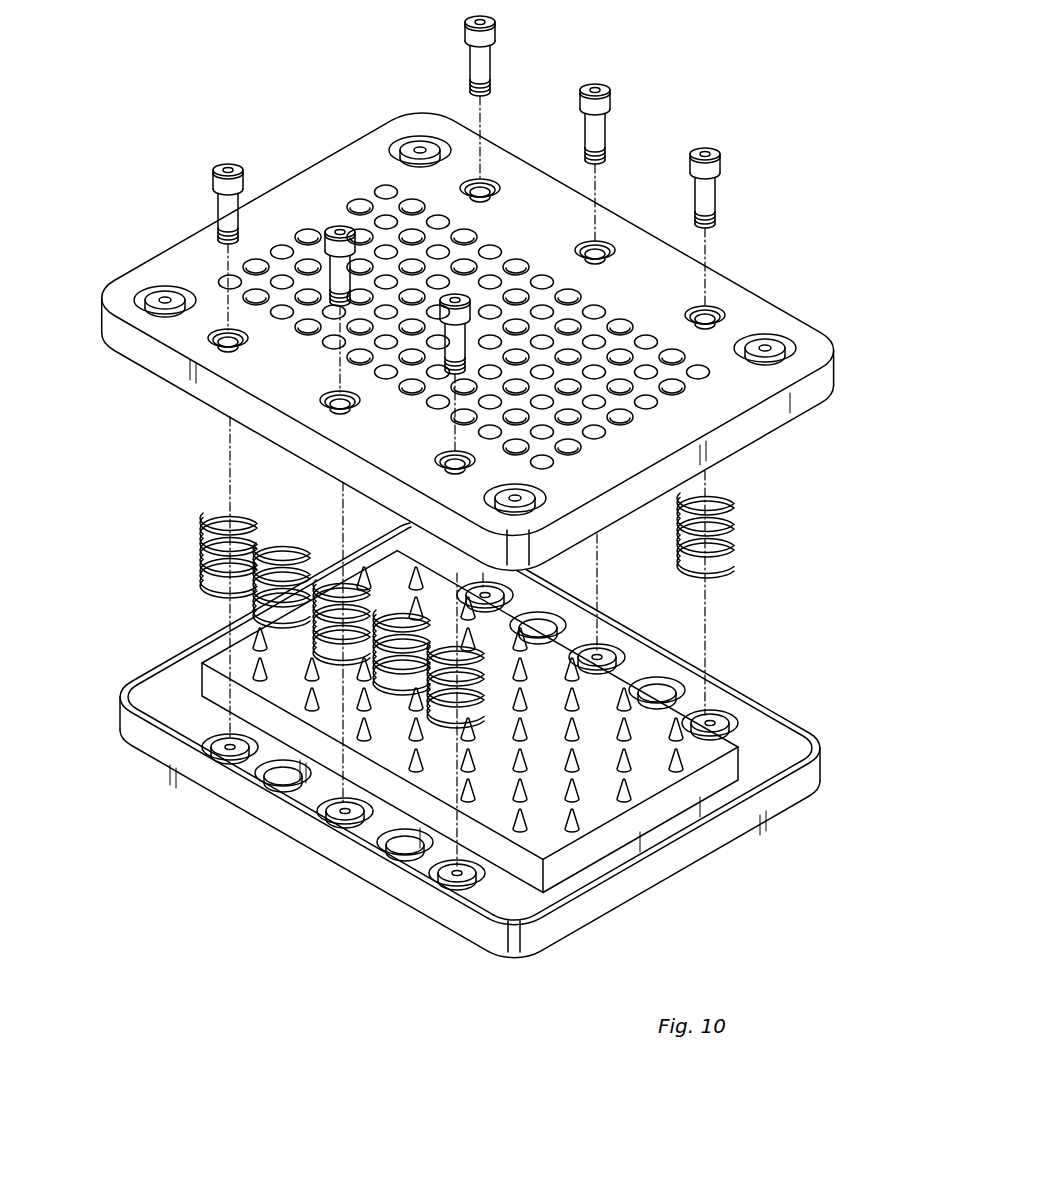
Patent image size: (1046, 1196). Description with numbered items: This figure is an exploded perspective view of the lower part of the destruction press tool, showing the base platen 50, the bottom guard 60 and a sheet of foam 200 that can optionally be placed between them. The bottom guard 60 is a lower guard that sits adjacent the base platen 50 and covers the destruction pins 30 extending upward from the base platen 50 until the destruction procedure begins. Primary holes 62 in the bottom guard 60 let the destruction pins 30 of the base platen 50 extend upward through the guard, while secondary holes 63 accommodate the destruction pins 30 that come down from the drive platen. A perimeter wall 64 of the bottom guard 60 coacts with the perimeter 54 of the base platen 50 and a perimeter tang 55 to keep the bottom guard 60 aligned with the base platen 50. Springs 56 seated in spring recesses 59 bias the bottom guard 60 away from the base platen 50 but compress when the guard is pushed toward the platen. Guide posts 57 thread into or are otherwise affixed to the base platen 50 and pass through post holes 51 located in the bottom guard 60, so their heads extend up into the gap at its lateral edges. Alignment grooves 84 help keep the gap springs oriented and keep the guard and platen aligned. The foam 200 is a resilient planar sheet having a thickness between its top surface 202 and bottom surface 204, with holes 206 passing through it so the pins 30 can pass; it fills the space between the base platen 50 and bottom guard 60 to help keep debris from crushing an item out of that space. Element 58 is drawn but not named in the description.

The destruction pins 30 is at (525, 702).
The base platen 50 is at (475, 751).
The post holes 51 is at (582, 246).
The perimeter 54 is at (486, 767).
The perimeter tang 55 is at (150, 706).
The springs 56 is at (210, 525).
The guide posts 57 is at (492, 60).
The counterbore 58 is at (608, 645).
The spring recesses 59 is at (650, 680).
The bottom guard 60 is at (463, 327).
The primary holes 62 is at (412, 394).
The secondary holes 63 is at (330, 346).
The perimeter wall 64 is at (276, 430).
The alignment grooves 84 is at (408, 147).
The foam 200 is at (530, 722).
The top surface 202 is at (566, 752).
The bottom surface 204 is at (488, 945).
The holes 206 is at (369, 738).